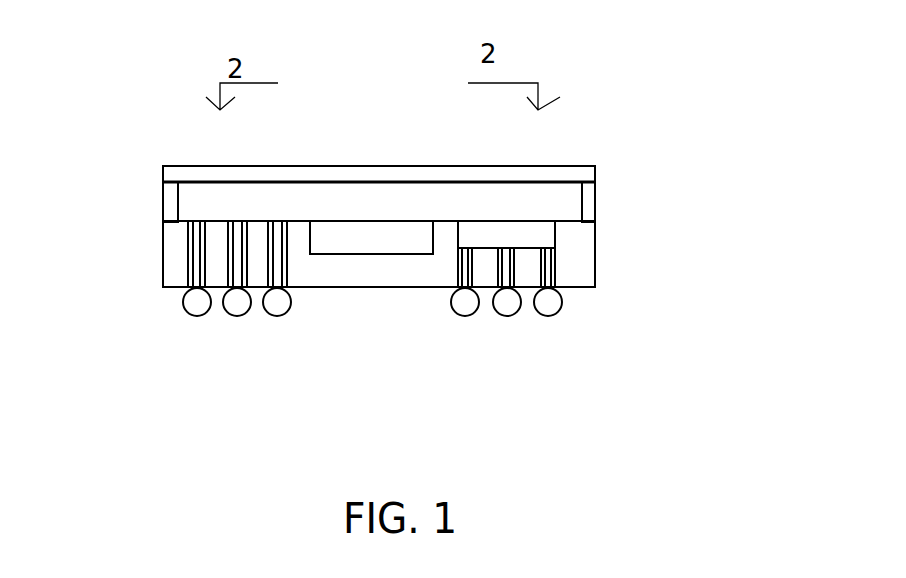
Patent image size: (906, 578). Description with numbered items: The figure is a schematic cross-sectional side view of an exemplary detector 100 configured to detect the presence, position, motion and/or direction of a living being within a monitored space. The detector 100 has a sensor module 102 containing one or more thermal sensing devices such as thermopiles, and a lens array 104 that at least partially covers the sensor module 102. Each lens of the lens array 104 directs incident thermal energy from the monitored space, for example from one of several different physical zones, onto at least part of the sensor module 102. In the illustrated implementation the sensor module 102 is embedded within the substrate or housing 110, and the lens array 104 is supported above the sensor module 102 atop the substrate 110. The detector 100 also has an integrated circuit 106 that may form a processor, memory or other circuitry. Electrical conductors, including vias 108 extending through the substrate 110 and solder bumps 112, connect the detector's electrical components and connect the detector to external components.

The detector 100 is at (622, 128).
The sensor module 102 is at (367, 236).
The lens array 104 is at (232, 159).
The integrated circuit 106 is at (515, 235).
The vias 108 is at (170, 244).
The substrate 110 is at (582, 260).
The solder bumps 112 is at (565, 315).